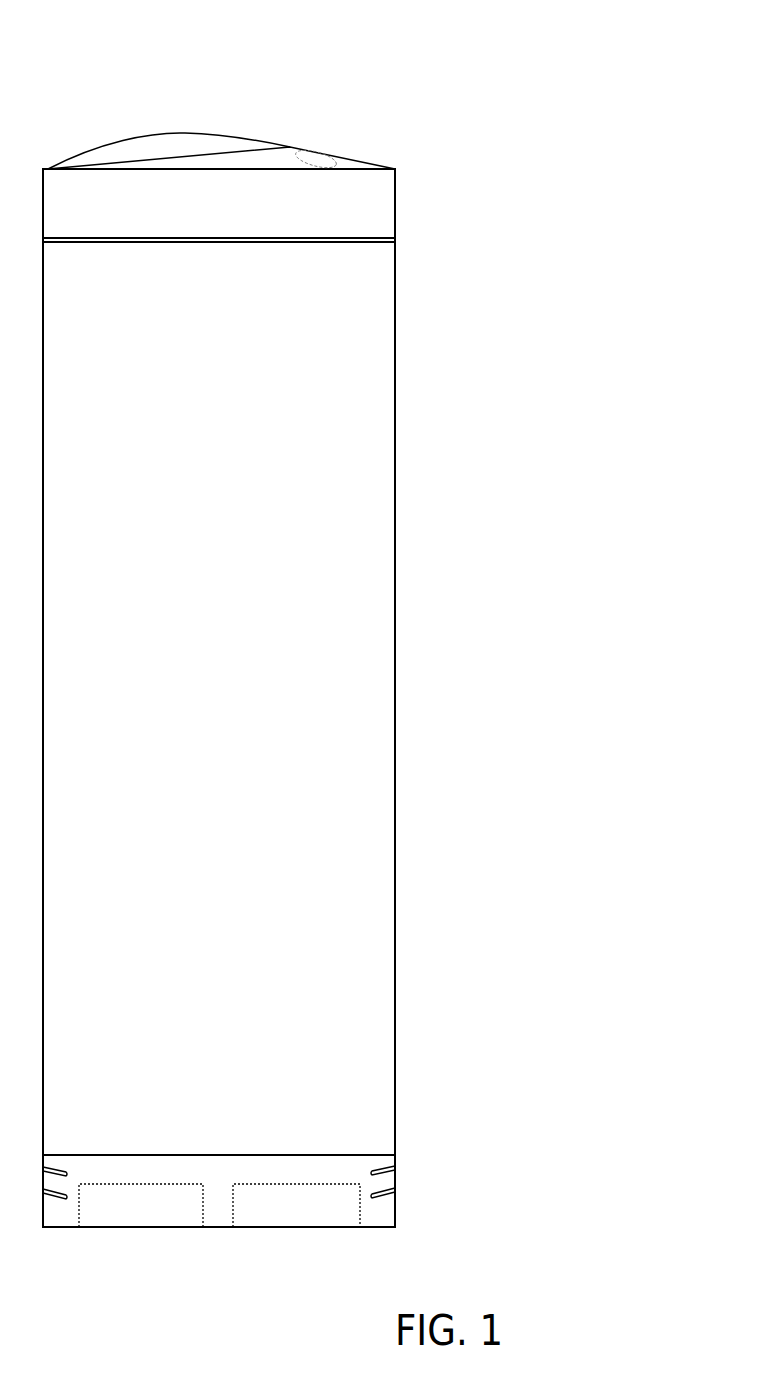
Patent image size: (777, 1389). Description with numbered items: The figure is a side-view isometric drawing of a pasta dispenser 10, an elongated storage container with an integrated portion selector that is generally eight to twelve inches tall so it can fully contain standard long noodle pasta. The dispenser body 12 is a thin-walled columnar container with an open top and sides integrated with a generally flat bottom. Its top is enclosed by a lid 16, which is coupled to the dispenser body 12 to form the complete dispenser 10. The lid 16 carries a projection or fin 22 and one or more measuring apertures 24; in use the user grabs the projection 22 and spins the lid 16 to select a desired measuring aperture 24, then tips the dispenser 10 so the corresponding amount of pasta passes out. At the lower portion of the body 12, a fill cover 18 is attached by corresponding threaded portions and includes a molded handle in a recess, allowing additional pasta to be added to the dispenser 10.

The pasta dispenser 10 is at (555, 97).
The dispenser body 12 is at (340, 505).
The lid 16 is at (353, 165).
The fill cover 18 is at (373, 1212).
The projection or fin 22 is at (100, 158).
The measuring aperture 24 is at (294, 151).